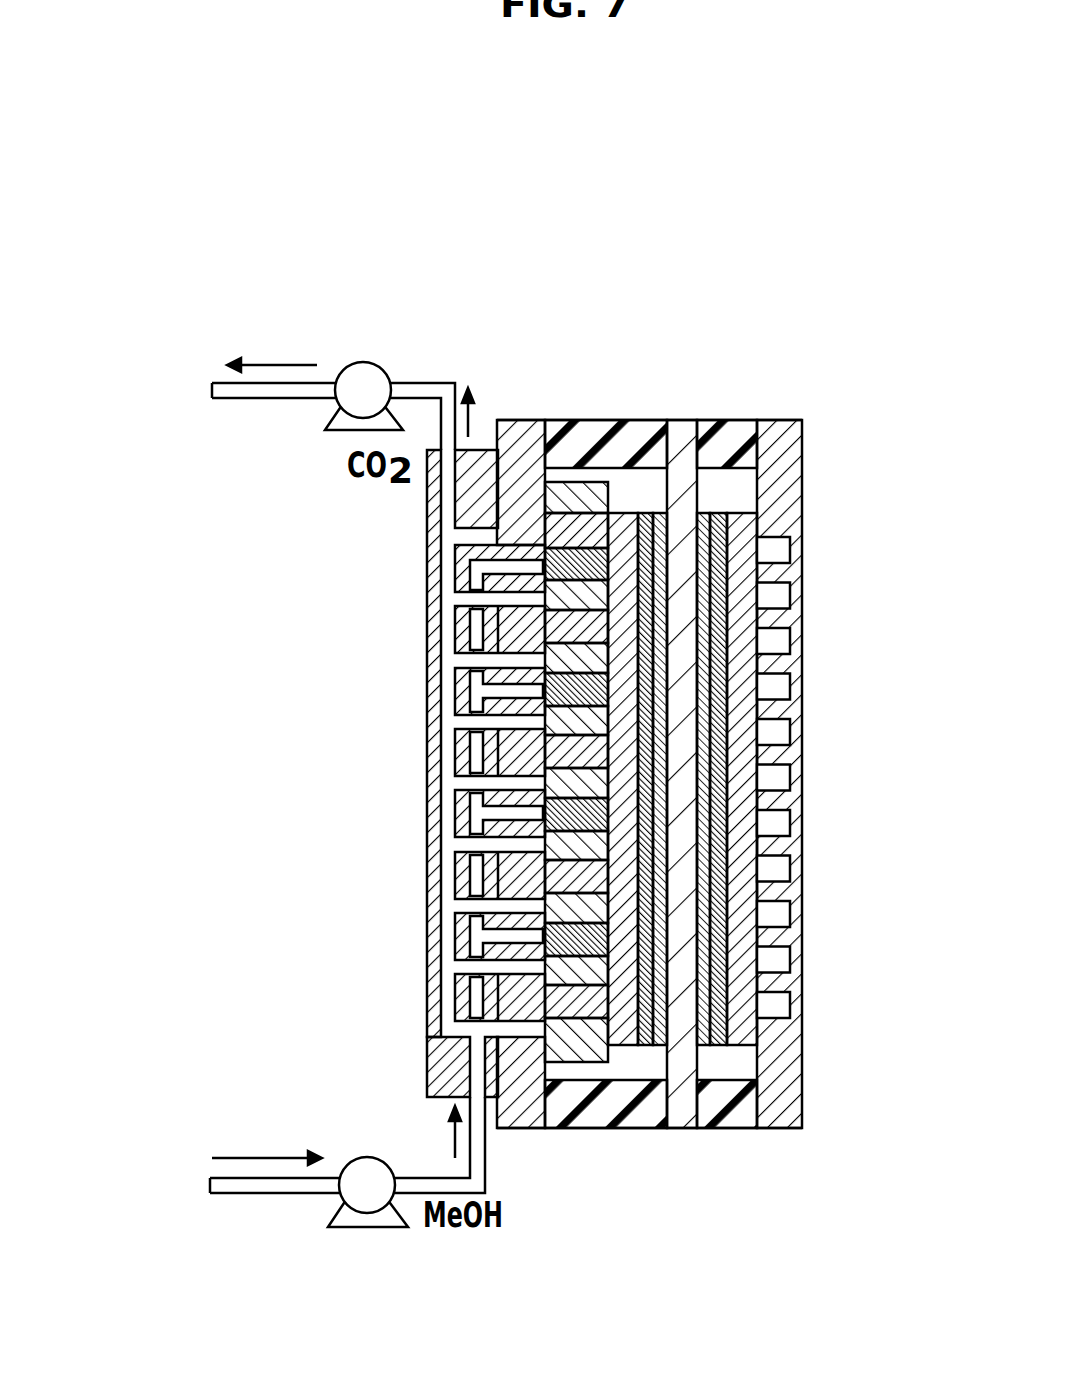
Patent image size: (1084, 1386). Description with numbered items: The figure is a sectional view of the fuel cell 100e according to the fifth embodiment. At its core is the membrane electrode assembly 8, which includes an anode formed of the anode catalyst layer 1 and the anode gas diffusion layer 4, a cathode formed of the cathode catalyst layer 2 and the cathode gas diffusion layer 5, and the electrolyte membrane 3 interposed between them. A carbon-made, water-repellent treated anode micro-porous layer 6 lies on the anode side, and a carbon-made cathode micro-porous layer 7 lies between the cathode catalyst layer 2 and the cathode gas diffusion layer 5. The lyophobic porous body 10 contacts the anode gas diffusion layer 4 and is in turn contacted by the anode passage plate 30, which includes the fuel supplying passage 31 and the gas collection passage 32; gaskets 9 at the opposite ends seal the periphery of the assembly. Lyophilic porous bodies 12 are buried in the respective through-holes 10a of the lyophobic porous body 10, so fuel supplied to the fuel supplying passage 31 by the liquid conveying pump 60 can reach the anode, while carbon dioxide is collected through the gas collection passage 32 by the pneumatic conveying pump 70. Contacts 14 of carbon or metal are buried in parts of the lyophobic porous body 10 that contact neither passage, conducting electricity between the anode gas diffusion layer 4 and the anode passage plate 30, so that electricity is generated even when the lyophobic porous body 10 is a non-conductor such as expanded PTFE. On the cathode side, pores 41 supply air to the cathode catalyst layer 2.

The fuel cell 100e is at (656, 248).
The pneumatic conveying pump 70 is at (363, 362).
The liquid conveying pump 60 is at (373, 1228).
The anode passage plate 30 is at (507, 420).
The fuel supplying passage 31 is at (472, 1067).
The gas collection passage 32 is at (440, 858).
The through-holes 10a is at (552, 425).
The lyophobic porous body 10 is at (567, 791).
The lyophilic porous bodies 12 is at (596, 512).
The contacts 14 is at (562, 1063).
The anode micro-porous layer 6 is at (654, 513).
The cathode micro-porous layer 7 is at (720, 513).
The gaskets 9 is at (735, 420).
The pores 41 is at (780, 420).
The anode catalyst layer 1 is at (655, 1045).
The cathode catalyst layer 2 is at (705, 1045).
The electrolyte membrane 3 is at (686, 1045).
The anode gas diffusion layer 4 is at (632, 1045).
The cathode gas diffusion layer 5 is at (745, 1045).
The membrane electrode assembly 8 is at (758, 1240).